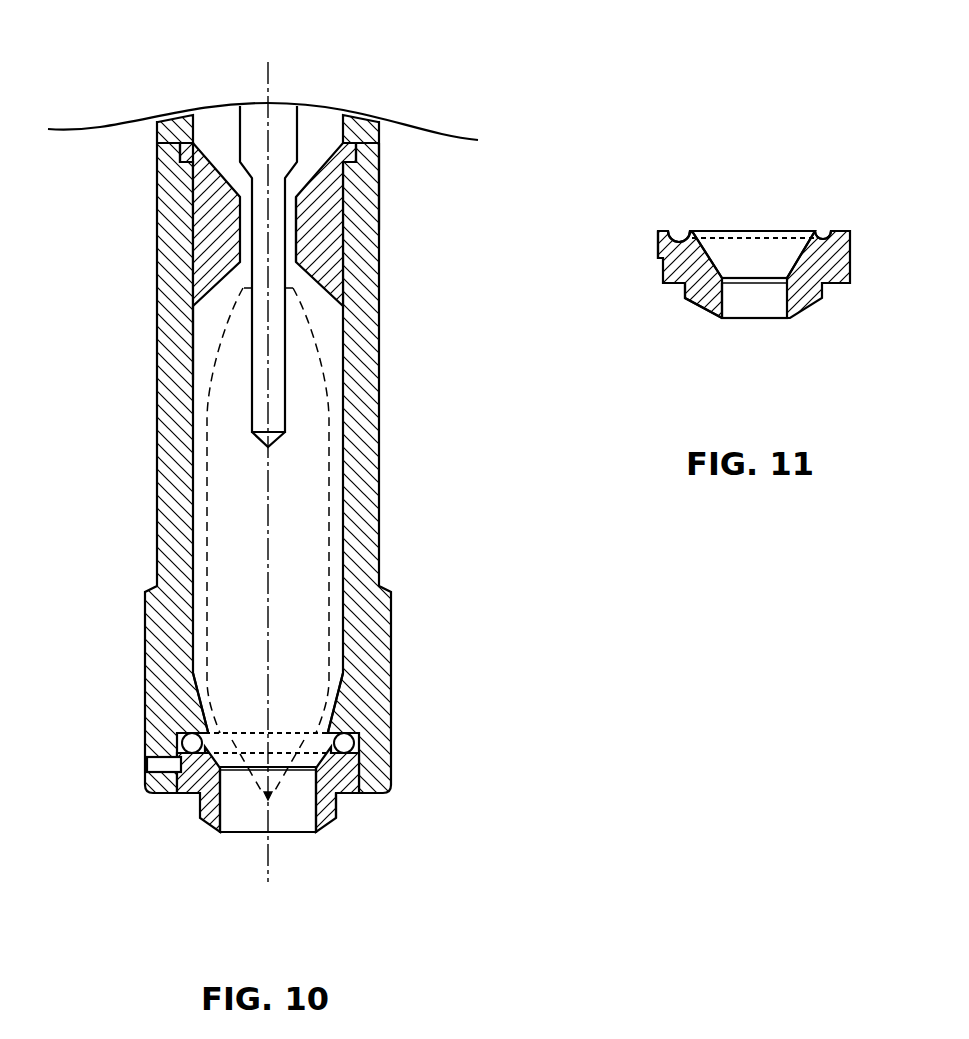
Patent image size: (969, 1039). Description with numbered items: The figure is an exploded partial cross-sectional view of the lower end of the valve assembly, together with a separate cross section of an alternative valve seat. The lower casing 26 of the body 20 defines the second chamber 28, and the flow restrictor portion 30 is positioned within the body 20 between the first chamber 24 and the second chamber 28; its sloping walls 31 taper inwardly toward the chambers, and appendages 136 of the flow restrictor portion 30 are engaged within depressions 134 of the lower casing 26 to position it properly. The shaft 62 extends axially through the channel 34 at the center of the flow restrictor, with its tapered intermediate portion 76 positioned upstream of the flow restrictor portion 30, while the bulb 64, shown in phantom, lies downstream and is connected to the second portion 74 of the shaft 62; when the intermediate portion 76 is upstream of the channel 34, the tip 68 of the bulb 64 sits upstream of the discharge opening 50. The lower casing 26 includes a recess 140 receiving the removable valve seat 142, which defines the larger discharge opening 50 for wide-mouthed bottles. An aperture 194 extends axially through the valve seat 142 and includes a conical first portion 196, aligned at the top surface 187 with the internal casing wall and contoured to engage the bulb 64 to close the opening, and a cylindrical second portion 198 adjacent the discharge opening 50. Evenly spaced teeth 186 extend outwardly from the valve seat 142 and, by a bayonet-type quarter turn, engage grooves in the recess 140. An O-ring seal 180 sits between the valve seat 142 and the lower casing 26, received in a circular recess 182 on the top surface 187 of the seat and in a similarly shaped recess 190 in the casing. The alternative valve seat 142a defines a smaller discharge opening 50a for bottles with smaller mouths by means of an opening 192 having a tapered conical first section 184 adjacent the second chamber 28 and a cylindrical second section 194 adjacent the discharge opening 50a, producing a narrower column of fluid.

In FIG. 10, the body 20 is at (153, 255).
In FIG. 10, the first internal chamber 24 is at (217, 128).
In FIG. 10, the lower casing 26 is at (370, 437).
In FIG. 10, the second internal chamber 28 is at (192, 342).
In FIG. 10, the flow restrictor portion 30 is at (333, 258).
In FIG. 10, the wall 31 is at (325, 188).
In FIG. 10, the channel 34 is at (202, 332).
In FIG. 10, the discharge opening 50 is at (290, 817).
In FIG. 11, the discharge opening 50a is at (772, 308).
In FIG. 10, the shaft 62 is at (285, 157).
In FIG. 10, the bulb 64 is at (225, 507).
In FIG. 10, the tip 68 is at (183, 793).
In FIG. 10, the second portion 74 is at (276, 367).
In FIG. 10, the tapered intermediate portion 76 is at (243, 172).
In FIG. 10, the depressions 134 is at (377, 190).
In FIG. 10, the appendages 136 is at (356, 152).
In FIG. 10, the recess 140 is at (183, 748).
In FIG. 10, the valve seat 142 is at (297, 795).
In FIG. 11, the valve seat 142a is at (849, 265).
In FIG. 10, the O-ring seal 180 is at (350, 743).
In FIG. 11, the recess 182 is at (827, 240).
In FIG. 11, the first section 184 is at (690, 276).
In FIG. 10, the teeth 186 is at (173, 743).
In FIG. 11, the teeth 186 is at (657, 235).
In FIG. 11, the top surface 187 is at (686, 232).
In FIG. 10, the recess 190 is at (340, 727).
In FIG. 11, the opening 192 is at (755, 257).
In FIG. 10, the aperture 194 is at (347, 780).
In FIG. 11, the aperture 194 is at (725, 300).
In FIG. 10, the first portion 196 is at (190, 668).
In FIG. 10, the second portion 198 is at (258, 778).